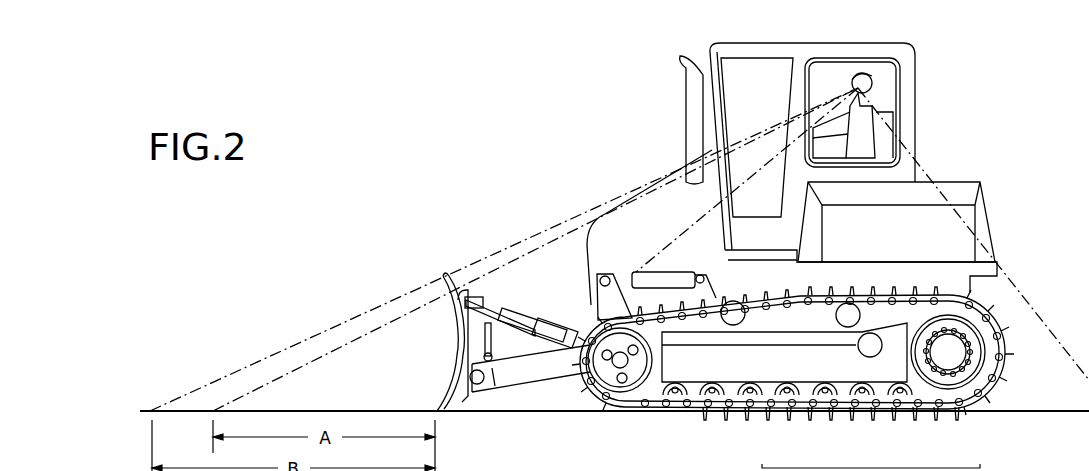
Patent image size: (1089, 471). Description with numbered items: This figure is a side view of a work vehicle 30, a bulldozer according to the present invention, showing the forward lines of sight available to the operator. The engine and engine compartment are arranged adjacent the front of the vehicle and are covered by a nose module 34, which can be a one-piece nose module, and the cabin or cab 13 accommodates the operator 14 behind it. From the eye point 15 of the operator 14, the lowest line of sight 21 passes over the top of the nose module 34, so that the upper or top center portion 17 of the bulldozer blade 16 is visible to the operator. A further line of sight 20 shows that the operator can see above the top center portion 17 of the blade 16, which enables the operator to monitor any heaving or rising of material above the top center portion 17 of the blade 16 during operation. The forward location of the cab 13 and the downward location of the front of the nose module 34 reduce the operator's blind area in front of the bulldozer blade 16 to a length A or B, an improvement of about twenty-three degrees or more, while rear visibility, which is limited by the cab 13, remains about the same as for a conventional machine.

The cab 13 is at (907, 100).
The operator 14 is at (860, 145).
The eye point 15 is at (862, 74).
The bulldozer blade 16 is at (468, 340).
The top center portion 17 is at (440, 278).
The line of sight 20 is at (355, 318).
The lowest line of sight 21 is at (341, 350).
The work vehicle 30 is at (566, 211).
The nose module 34 is at (657, 222).